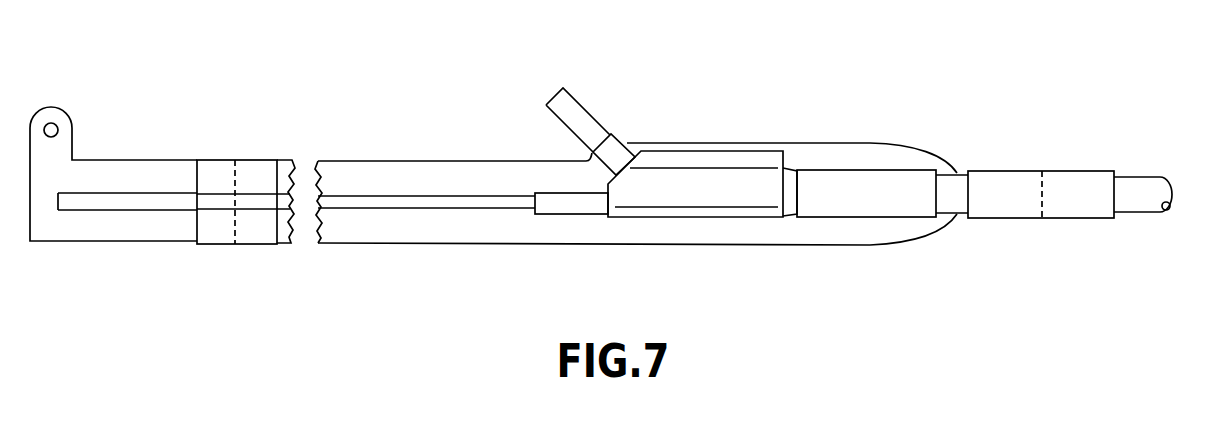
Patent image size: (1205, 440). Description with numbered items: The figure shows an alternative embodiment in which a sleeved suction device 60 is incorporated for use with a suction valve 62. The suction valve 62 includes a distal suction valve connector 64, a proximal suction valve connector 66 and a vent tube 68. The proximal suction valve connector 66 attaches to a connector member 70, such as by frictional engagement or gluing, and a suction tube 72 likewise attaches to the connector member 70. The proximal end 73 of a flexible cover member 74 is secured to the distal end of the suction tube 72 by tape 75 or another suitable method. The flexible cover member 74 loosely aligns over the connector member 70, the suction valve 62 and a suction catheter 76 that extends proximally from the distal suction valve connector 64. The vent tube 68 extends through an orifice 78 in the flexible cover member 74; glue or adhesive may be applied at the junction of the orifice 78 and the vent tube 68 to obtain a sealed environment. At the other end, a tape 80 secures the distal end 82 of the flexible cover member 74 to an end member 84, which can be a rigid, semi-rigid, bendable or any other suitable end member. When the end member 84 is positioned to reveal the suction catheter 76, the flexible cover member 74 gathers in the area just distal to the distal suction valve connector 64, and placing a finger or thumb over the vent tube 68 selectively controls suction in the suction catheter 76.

The sleeved suction device 60 is at (411, 106).
The suction valve 62 is at (743, 163).
The distal suction valve connector 64 is at (578, 208).
The proximal suction valve connector 66 is at (790, 204).
The vent tube 68 is at (572, 107).
The connector member 70 is at (900, 180).
The suction tube 72 is at (1142, 185).
The proximal end 73 is at (937, 158).
The flexible cover member 74 is at (486, 160).
The tape 75 is at (1058, 182).
The suction catheter 76 is at (463, 207).
The orifice 78 is at (599, 134).
The tape 80 is at (253, 163).
The distal end 82 is at (288, 162).
The end member 84 is at (115, 150).